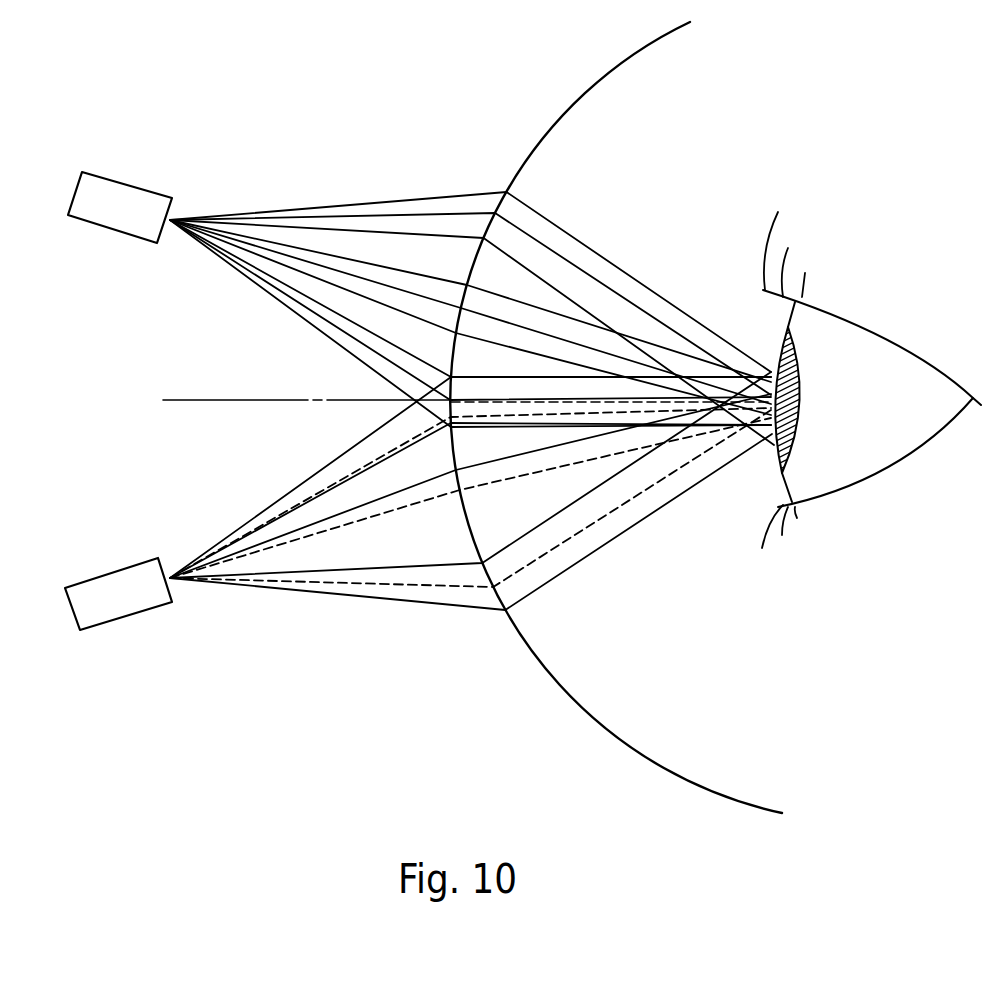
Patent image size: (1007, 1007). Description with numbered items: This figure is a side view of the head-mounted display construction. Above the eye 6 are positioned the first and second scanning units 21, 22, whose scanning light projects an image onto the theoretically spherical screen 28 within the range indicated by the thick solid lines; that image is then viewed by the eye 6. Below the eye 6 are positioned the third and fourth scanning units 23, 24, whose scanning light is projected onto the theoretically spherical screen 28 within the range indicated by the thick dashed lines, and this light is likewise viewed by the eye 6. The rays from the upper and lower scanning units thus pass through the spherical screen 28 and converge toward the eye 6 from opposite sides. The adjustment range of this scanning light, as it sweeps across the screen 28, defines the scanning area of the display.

The eye 6 is at (850, 472).
The first scanning unit 21 is at (139, 177).
The second scanning unit 22 is at (130, 200).
The third scanning unit 23 is at (129, 631).
The fourth scanning unit 24 is at (103, 612).
The theoretically spherical screen 28 is at (553, 677).